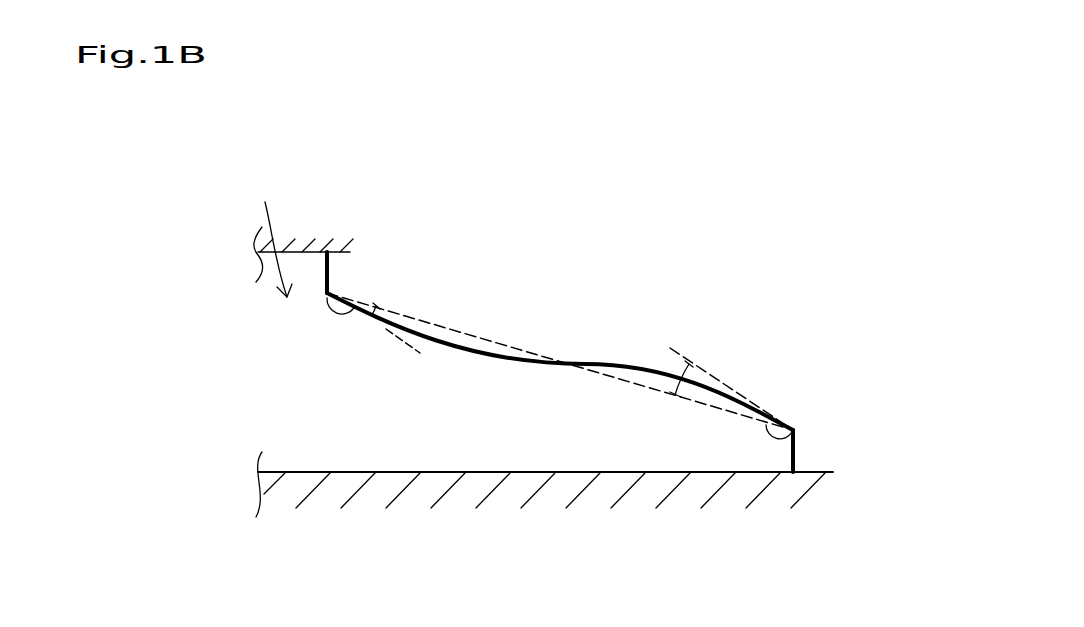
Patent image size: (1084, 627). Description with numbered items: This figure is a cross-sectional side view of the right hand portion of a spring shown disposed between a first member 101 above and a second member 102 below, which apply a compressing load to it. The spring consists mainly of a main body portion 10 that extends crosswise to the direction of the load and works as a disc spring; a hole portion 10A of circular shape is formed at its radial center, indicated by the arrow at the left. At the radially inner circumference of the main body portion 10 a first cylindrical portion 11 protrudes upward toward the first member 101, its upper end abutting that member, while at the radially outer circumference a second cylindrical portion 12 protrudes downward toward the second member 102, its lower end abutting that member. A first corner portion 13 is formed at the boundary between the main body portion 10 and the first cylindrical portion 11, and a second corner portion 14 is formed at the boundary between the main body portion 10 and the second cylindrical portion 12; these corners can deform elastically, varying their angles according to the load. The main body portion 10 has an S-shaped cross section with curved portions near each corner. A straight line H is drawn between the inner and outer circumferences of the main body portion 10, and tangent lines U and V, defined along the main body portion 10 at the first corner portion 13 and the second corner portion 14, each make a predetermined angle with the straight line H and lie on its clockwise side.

The main body portion 10 is at (508, 361).
The hole portion 10A is at (267, 236).
The first cylindrical portion 11 is at (330, 268).
The second cylindrical portion 12 is at (796, 453).
The first corner portion 13 is at (358, 310).
The second corner portion 14 is at (768, 423).
The first member 101 is at (314, 247).
The second member 102 is at (373, 493).
The straight line H is at (452, 328).
The tangent line U is at (406, 348).
The tangent line V is at (723, 378).